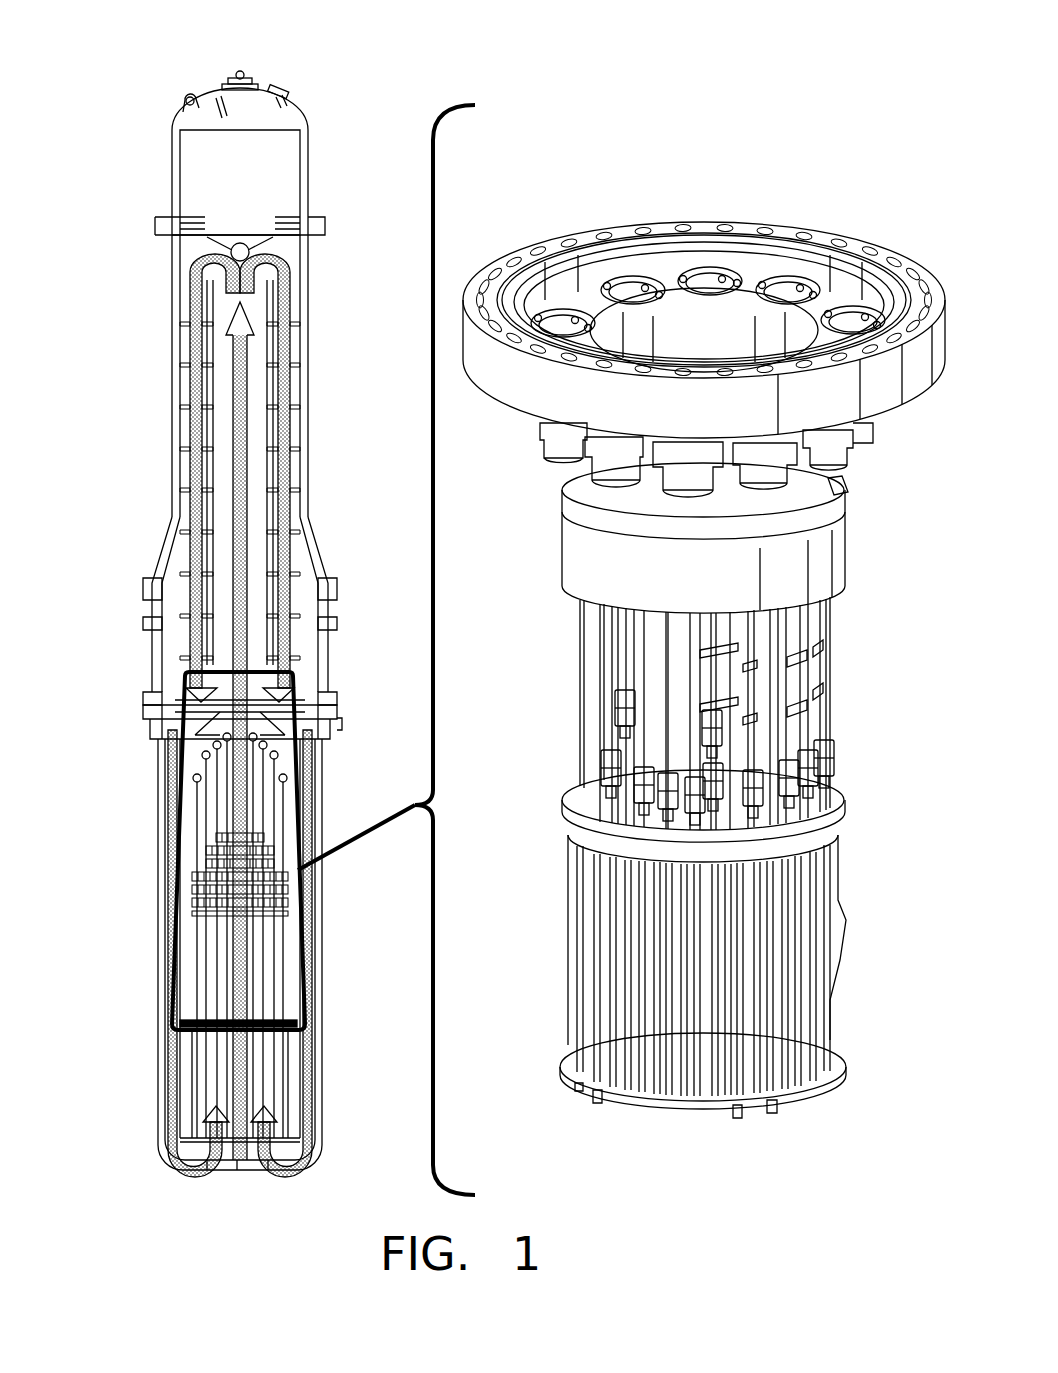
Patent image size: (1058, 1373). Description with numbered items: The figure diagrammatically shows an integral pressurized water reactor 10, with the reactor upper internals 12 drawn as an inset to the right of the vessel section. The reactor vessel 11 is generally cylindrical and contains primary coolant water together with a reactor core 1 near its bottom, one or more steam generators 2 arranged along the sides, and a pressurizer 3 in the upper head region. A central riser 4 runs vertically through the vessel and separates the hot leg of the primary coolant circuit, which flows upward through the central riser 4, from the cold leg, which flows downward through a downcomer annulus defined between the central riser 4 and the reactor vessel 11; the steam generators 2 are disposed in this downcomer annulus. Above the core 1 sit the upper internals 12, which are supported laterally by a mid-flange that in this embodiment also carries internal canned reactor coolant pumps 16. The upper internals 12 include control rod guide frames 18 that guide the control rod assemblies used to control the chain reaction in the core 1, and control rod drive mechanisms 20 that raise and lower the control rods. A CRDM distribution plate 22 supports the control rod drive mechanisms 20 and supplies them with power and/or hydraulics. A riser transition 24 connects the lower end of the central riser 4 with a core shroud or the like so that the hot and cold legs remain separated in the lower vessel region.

The reactor core 1 is at (205, 1085).
The steam generators 2 is at (185, 420).
The pressurizer 3 is at (220, 180).
The central riser 4 is at (255, 395).
The integral pressurized water reactor 10 is at (126, 297).
The reactor vessel 11 is at (160, 822).
The reactor upper internals 12 is at (716, 131).
The reactor coolant pumps 16 is at (840, 456).
The control rod guide frames 18 is at (840, 977).
The control rod drive mechanisms 20 is at (832, 755).
The CRDM distribution plate 22 is at (565, 777).
The riser transition 24 is at (590, 560).